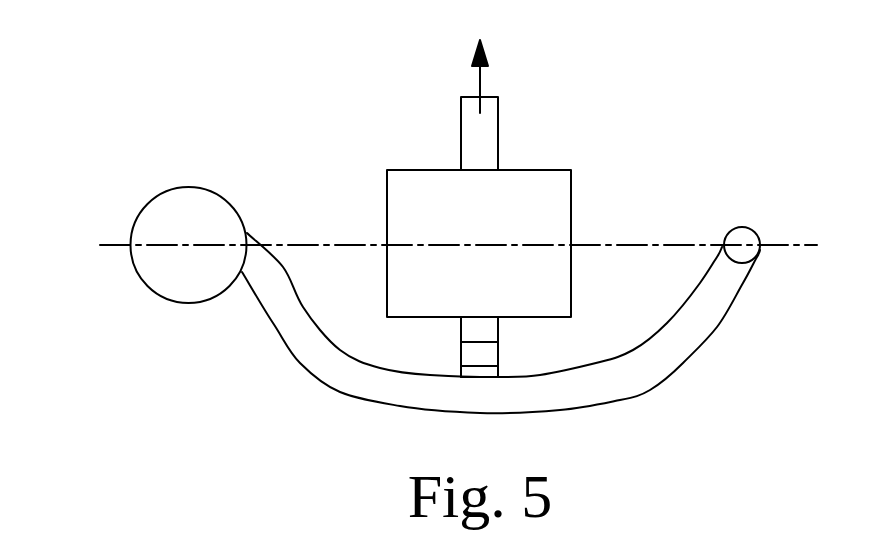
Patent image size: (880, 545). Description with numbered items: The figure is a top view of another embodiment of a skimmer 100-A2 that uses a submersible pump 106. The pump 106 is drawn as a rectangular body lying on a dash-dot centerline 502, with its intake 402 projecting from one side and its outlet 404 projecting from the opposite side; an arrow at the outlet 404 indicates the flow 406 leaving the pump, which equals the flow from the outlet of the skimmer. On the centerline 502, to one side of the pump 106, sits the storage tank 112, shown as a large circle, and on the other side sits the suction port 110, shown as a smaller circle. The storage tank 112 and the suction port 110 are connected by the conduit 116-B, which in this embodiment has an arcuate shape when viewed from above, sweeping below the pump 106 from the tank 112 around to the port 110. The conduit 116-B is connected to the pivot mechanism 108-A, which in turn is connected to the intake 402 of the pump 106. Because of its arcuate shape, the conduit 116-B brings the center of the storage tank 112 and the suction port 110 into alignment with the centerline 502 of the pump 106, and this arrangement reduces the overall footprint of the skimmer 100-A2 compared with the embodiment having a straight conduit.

The skimmer 100-A2 is at (118, 401).
The submersible pump 106 is at (571, 230).
The pivot mechanism 108-A is at (460, 354).
The suction port 110 is at (745, 227).
The storage tank 112 is at (228, 197).
The conduit 116-B is at (287, 347).
The intake 402 is at (498, 327).
The outlet 404 is at (460, 141).
The flow 406 is at (482, 82).
The centerline 502 is at (113, 245).